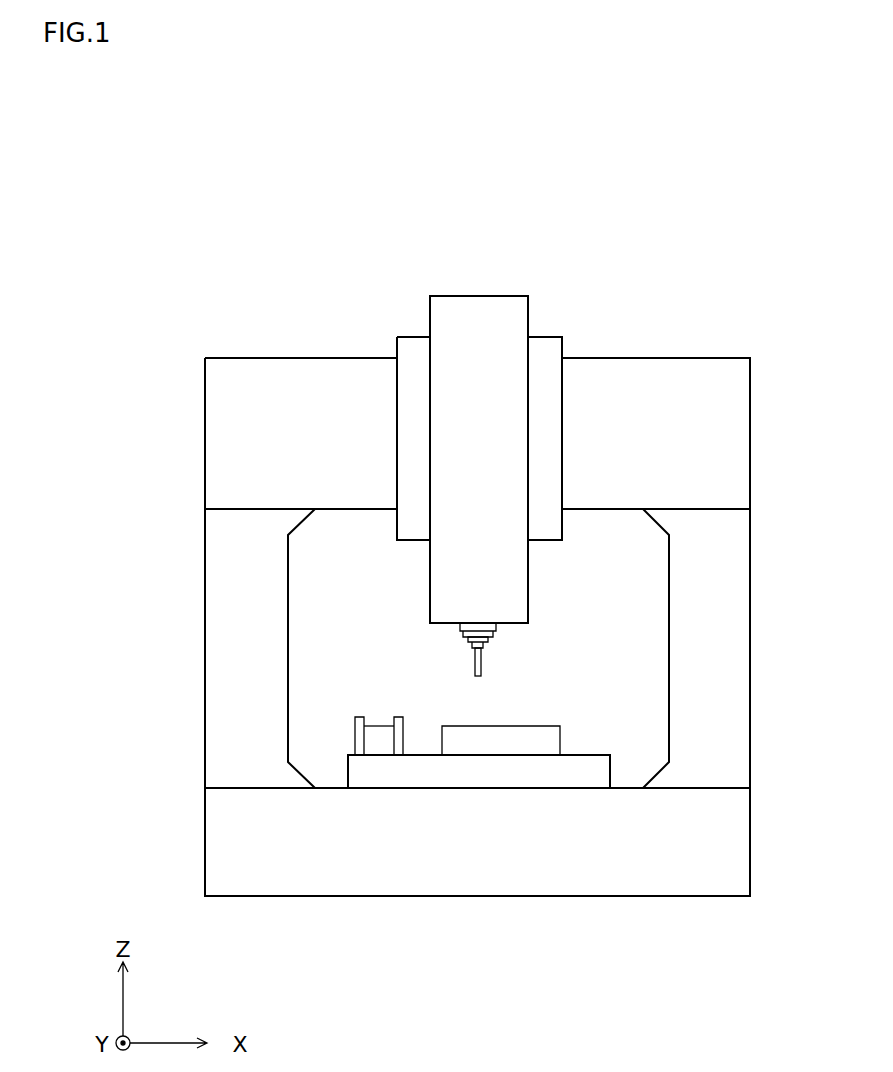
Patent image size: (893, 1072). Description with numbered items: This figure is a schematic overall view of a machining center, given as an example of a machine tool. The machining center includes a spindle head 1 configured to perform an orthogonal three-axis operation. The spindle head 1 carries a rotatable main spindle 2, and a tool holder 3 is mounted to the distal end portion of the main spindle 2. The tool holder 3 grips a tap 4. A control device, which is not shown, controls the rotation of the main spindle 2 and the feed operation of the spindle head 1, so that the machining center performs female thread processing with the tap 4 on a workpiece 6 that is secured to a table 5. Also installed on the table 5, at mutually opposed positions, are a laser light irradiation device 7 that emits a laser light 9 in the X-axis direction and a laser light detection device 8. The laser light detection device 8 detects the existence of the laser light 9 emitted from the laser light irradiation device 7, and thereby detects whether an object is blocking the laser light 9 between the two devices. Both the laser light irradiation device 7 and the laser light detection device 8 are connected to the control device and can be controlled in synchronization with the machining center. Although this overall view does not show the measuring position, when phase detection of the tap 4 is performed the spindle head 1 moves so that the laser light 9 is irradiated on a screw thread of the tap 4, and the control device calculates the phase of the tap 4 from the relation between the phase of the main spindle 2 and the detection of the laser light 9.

The spindle head 1 is at (497, 308).
The main spindle 2 is at (483, 630).
The tool holder 3 is at (470, 641).
The tap 4 is at (482, 660).
The table 5 is at (543, 780).
The workpiece 6 is at (548, 737).
The laser light irradiation device 7 is at (360, 737).
The laser light detection device 8 is at (400, 738).
The laser light 9 is at (377, 723).